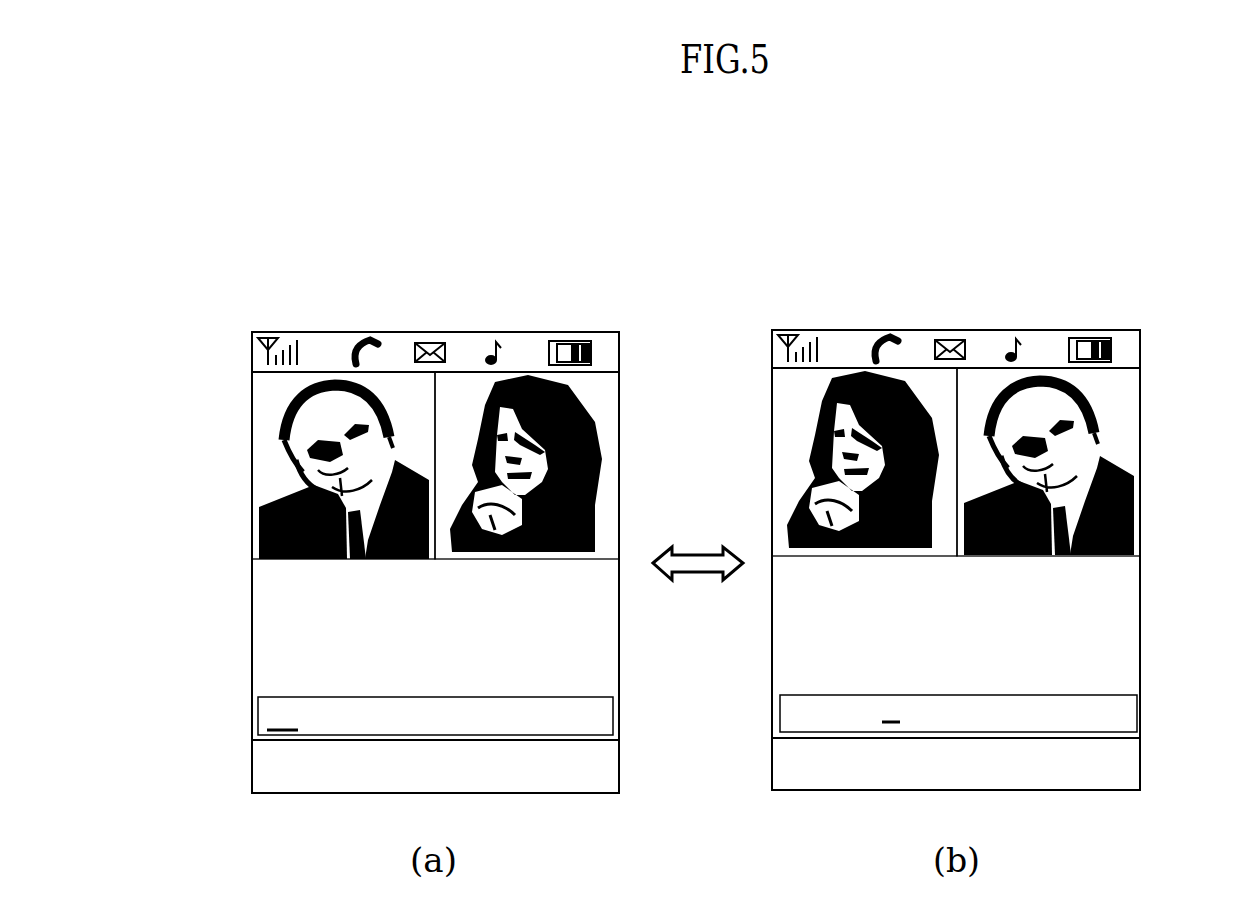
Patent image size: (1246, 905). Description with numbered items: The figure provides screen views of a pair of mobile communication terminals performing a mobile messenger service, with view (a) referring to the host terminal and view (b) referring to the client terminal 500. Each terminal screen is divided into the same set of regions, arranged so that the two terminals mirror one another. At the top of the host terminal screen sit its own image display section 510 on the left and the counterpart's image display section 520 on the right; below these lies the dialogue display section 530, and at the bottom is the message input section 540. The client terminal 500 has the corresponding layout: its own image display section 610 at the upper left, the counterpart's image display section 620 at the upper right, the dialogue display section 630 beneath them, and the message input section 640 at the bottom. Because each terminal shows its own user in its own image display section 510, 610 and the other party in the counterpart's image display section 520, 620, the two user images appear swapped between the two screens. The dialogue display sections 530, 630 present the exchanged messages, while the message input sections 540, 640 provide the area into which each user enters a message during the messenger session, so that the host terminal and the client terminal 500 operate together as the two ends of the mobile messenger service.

The client terminal 500 is at (459, 296).
The image display section 510 is at (270, 445).
The counterpart's image display section 520 is at (602, 413).
The dialogue display section 530 is at (273, 643).
The message input section 540 is at (285, 727).
The image display section 610 is at (982, 260).
The counterpart's image display section 620 is at (1115, 398).
The dialogue display section 630 is at (1125, 610).
The message input section 640 is at (1138, 712).